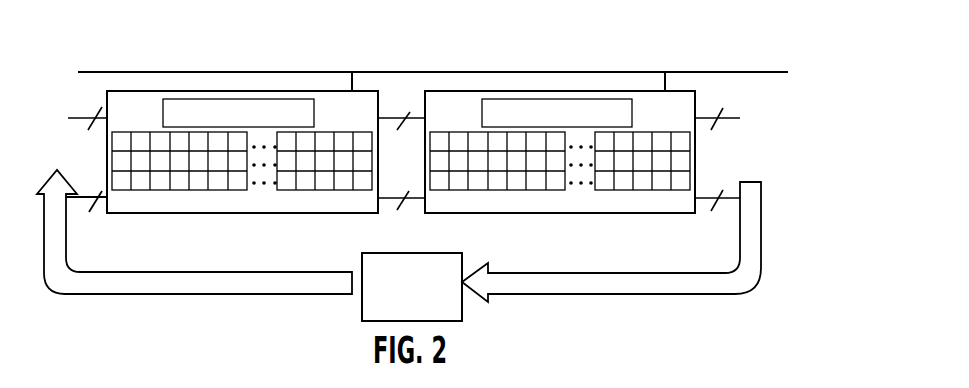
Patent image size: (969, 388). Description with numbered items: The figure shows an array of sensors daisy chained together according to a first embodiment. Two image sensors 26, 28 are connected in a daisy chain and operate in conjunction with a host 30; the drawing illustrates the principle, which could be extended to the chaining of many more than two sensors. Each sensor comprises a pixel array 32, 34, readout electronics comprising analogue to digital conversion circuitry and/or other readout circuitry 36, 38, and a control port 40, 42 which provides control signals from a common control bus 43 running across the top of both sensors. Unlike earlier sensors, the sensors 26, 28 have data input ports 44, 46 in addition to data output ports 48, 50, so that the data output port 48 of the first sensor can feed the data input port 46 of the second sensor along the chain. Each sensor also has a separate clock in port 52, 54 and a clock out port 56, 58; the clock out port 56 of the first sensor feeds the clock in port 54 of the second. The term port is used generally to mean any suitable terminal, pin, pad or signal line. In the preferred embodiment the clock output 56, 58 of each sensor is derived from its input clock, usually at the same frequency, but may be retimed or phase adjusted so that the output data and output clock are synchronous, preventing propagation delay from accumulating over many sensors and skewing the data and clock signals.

The image sensor 26 is at (251, 91).
The image sensor 28 is at (542, 91).
The host 30 is at (384, 294).
The pixel array 32 is at (202, 178).
The pixel array 34 is at (528, 198).
The readout circuitry 36 is at (195, 110).
The readout circuitry 38 is at (569, 112).
The control port 40 is at (352, 91).
The control port 42 is at (665, 91).
The control bus 43 is at (118, 72).
The data input port 44 is at (107, 110).
The data input port 46 is at (425, 108).
The data output port 48 is at (378, 118).
The data output port 50 is at (695, 117).
The clock in port 52 is at (104, 207).
The clock in port 54 is at (430, 198).
The clock out port 56 is at (373, 198).
The clock out port 58 is at (695, 198).